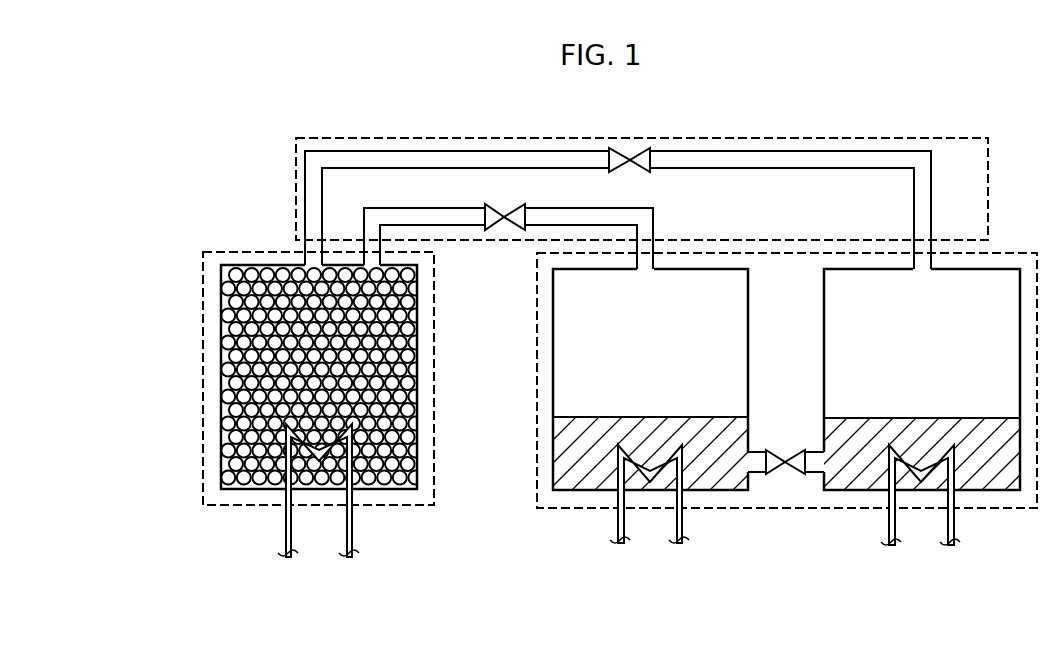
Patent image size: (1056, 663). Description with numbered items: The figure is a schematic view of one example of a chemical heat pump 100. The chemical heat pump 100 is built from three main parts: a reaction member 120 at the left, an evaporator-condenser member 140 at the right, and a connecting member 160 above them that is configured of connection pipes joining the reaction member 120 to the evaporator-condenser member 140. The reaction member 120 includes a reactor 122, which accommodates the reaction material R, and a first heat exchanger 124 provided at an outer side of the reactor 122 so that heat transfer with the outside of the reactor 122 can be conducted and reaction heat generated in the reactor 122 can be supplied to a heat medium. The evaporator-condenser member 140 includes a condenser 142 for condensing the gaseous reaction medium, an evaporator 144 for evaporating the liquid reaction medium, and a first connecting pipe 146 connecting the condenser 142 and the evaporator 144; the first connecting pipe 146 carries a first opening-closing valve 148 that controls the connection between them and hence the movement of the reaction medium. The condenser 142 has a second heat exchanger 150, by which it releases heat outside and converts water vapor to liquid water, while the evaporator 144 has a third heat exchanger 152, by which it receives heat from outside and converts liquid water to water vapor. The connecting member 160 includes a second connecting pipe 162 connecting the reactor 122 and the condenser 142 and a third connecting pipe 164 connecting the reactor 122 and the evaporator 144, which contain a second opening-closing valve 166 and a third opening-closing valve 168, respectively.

The chemical heat pump 100 is at (814, 121).
The reaction member 120 is at (435, 348).
The reactor 122 is at (221, 353).
The reaction material R is at (225, 421).
The first heat exchanger 124 is at (353, 530).
The evaporator-condenser member 140 is at (537, 402).
The condenser 142 is at (699, 424).
The evaporator 144 is at (955, 424).
The first connecting pipe 146 is at (811, 475).
The first opening-closing valve 148 is at (780, 455).
The second heat exchanger 150 is at (684, 524).
The third heat exchanger 152 is at (955, 525).
The connecting member 160 is at (493, 137).
The second connecting pipe 162 is at (425, 212).
The third connecting pipe 164 is at (305, 183).
The second opening-closing valve 166 is at (500, 209).
The third opening-closing valve 168 is at (633, 173).